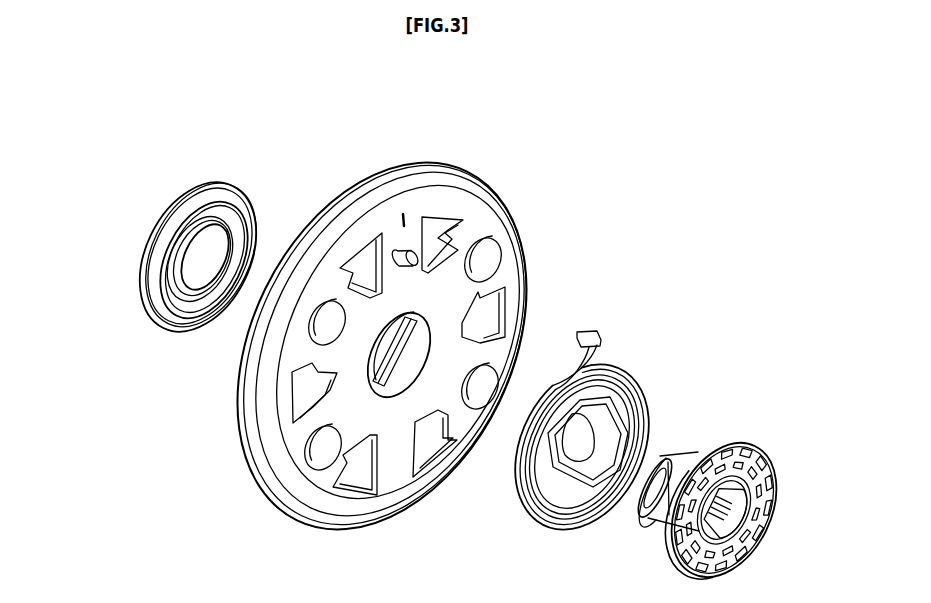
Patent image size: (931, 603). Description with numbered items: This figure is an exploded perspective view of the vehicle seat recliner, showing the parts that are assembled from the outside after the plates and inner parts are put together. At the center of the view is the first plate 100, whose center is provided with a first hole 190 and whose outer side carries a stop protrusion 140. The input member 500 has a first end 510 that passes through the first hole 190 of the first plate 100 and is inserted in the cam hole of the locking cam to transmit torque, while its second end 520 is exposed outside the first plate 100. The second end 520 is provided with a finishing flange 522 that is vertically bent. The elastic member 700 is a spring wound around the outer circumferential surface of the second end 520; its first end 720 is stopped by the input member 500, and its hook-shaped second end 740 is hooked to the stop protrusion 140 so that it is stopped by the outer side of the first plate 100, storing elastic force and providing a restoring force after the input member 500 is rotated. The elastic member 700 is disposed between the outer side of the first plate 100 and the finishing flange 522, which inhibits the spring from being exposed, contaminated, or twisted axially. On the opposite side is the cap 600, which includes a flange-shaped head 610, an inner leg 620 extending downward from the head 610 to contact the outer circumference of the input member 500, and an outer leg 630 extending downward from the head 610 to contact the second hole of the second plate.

The first plate 100 is at (481, 188).
The stop protrusion 140 is at (398, 252).
The first hole 190 is at (393, 396).
The input member 500 is at (741, 432).
The first end 510 is at (676, 442).
The second end 520 is at (748, 520).
The finishing flange 522 is at (760, 465).
The cap 600 is at (160, 199).
The head 610 is at (226, 215).
The inner leg 620 is at (178, 262).
The outer leg 630 is at (168, 237).
The elastic member 700 is at (626, 355).
The first end 720 is at (548, 488).
The second end 740 is at (593, 333).